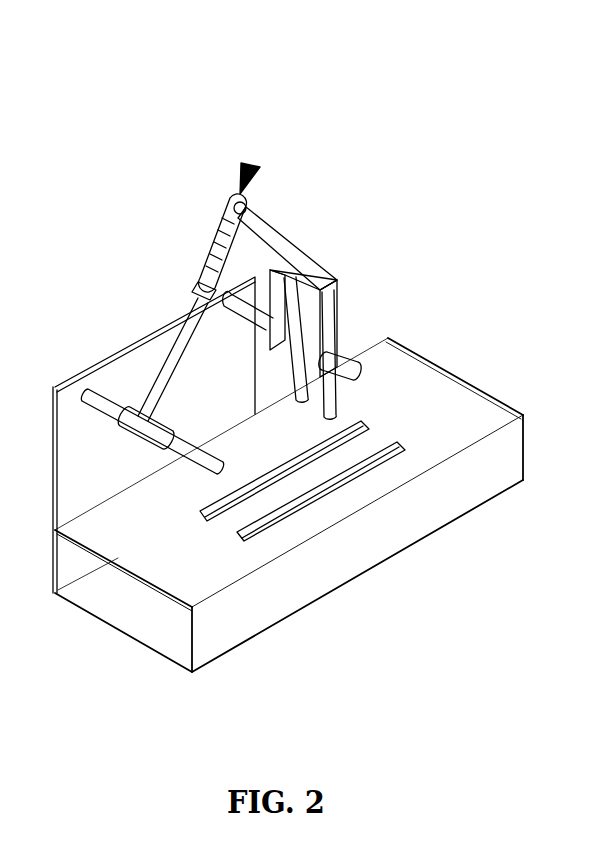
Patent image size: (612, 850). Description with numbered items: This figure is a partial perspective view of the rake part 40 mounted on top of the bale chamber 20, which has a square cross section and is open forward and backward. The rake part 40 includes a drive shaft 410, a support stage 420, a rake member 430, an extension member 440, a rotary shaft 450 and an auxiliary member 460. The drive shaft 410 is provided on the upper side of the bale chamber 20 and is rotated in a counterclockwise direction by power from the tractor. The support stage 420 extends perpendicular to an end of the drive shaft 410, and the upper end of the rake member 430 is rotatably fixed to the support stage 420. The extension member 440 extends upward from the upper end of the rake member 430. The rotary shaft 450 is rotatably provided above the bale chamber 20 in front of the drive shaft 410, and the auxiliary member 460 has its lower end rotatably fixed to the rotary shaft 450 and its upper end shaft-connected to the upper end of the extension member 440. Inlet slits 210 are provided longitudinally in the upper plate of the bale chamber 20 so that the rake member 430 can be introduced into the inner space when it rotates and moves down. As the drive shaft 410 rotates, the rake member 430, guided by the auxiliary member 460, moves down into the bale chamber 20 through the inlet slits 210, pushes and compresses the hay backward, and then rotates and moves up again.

The bale chamber 20 is at (430, 373).
The inlet slits 210 is at (262, 483).
The rake part 40 is at (250, 164).
The drive shaft 410 is at (350, 358).
The support stage 420 is at (317, 283).
The rake member 430 is at (325, 412).
The extension member 440 is at (272, 243).
The rotary shaft 450 is at (93, 400).
The auxiliary member 460 is at (197, 314).